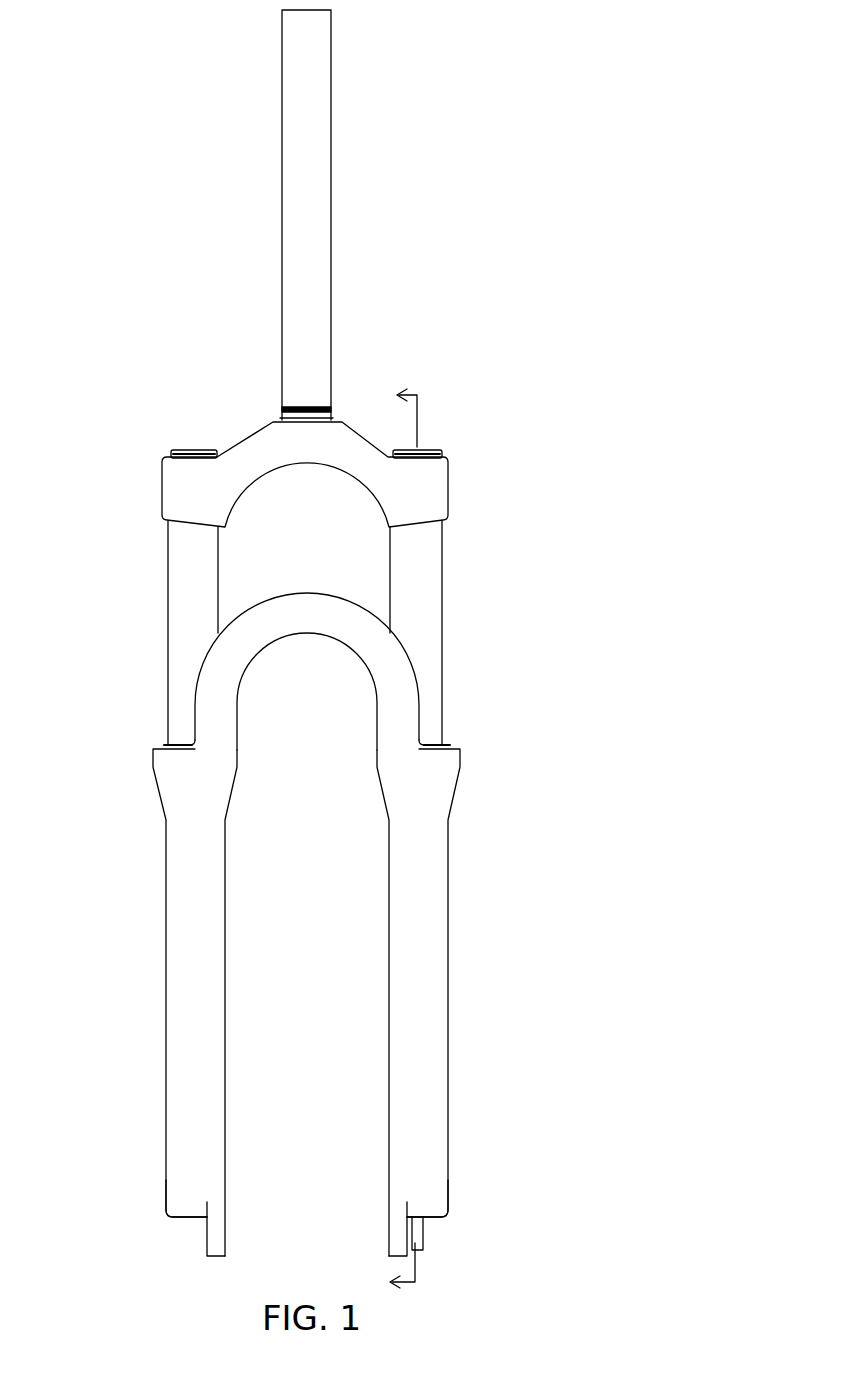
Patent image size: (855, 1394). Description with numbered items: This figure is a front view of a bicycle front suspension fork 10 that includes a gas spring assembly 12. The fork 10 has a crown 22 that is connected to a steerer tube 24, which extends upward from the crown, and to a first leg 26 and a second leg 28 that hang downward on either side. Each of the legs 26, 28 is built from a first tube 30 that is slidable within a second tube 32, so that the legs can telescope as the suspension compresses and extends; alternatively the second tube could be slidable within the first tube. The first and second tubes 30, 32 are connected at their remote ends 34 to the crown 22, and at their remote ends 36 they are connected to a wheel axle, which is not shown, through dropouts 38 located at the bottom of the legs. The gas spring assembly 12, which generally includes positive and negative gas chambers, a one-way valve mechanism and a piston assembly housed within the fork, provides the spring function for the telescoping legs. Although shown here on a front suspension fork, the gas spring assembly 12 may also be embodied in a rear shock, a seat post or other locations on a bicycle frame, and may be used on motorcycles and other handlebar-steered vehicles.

The bicycle front suspension fork 10 is at (519, 137).
The gas spring assembly 12 is at (517, 615).
The crown 22 is at (262, 452).
The steerer tube 24 is at (295, 283).
The first leg 26 is at (168, 555).
The second leg 28 is at (443, 560).
The first tube 30 is at (193, 638).
The second tube 32 is at (190, 912).
The remote ends 34 is at (172, 455).
The remote ends 36 is at (177, 1197).
The dropouts 38 is at (213, 1243).